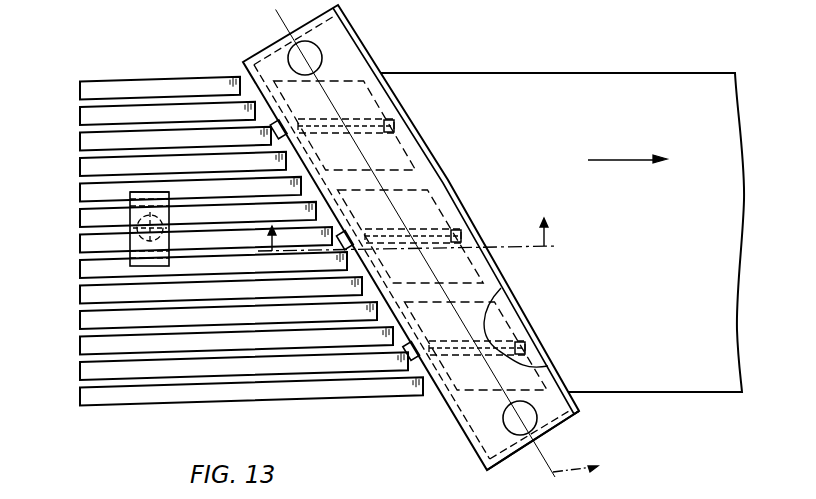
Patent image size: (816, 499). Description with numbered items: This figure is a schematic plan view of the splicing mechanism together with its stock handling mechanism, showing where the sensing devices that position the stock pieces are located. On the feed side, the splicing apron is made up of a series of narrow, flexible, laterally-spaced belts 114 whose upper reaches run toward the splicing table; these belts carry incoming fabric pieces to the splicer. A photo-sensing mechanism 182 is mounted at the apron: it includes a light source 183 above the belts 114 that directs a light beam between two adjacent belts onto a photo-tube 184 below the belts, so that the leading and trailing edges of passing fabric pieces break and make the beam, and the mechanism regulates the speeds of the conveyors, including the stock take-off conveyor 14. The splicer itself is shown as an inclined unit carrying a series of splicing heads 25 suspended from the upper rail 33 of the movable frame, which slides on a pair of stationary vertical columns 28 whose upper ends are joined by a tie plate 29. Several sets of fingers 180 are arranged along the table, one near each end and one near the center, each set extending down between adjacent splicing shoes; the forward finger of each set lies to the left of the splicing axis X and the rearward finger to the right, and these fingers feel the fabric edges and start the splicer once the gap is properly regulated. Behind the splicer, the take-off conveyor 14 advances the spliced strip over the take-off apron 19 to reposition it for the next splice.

The belts 114 is at (193, 370).
The photo-sensing mechanism 182 is at (128, 262).
The light source 183 is at (132, 194).
The photo-tube 184 is at (133, 238).
The splicing heads 25 is at (420, 158).
The fingers 180 is at (399, 125).
The stationary vertical columns 28 is at (289, 62).
The tie plate 29 is at (581, 412).
The upper rail 33 is at (475, 417).
The take-off apron 19 is at (566, 72).
The stock take-off conveyor 14 is at (410, 255).
The splicing axis X is at (583, 472).